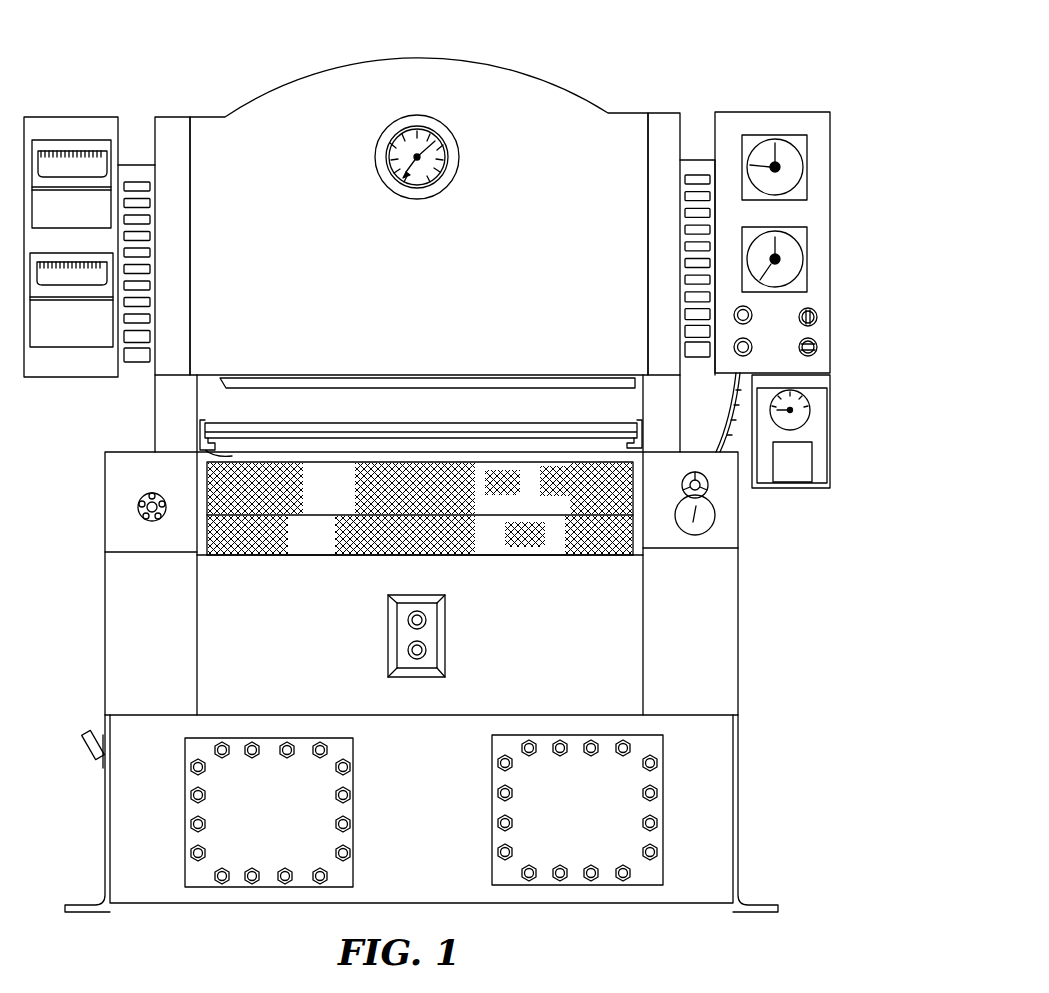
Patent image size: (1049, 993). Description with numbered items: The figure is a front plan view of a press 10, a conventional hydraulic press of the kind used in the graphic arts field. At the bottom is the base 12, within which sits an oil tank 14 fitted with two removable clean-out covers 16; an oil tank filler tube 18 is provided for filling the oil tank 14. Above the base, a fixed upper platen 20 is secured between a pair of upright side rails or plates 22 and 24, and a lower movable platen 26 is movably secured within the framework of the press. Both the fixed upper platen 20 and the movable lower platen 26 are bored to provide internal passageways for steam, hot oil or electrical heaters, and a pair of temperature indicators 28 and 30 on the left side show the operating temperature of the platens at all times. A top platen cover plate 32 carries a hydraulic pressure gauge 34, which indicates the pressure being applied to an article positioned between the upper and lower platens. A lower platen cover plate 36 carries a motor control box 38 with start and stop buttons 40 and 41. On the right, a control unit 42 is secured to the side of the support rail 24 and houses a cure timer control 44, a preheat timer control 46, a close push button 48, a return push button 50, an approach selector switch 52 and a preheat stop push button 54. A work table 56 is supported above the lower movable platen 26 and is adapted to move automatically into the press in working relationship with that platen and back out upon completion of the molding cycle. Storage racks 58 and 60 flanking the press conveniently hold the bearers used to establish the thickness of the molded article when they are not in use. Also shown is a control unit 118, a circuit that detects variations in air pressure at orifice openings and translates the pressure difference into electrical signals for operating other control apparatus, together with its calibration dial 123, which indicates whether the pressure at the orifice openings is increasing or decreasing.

The press 10 is at (574, 78).
The base 12 is at (98, 892).
The oil tank 14 is at (153, 885).
The removable clean-out covers 16 is at (236, 873).
The oil tank filler tube 18 is at (90, 748).
The fixed upper platen 20 is at (218, 380).
The upright side rail 22 is at (177, 130).
The upright side rail 24 is at (672, 125).
The lower movable platen 26 is at (210, 455).
The temperature indicator 28 is at (92, 160).
The temperature indicator 30 is at (82, 275).
The top platen cover plate 32 is at (270, 114).
The hydraulic pressure gauge 34 is at (440, 125).
The lower platen cover plate 36 is at (620, 600).
The motor control box 38 is at (447, 637).
The start button 40 is at (408, 617).
The stop button 41 is at (408, 651).
The control unit 42 is at (778, 118).
The cure timer control 44 is at (805, 140).
The preheat timer control 46 is at (748, 232).
The close push button 48 is at (752, 312).
The return push button 50 is at (752, 347).
The approach selector switch 52 is at (799, 318).
The preheat stop push button 54 is at (800, 354).
The work table 56 is at (610, 420).
The storage rack 58 is at (148, 280).
The storage rack 60 is at (690, 234).
The control unit 118 is at (822, 490).
The calibration dial 123 is at (775, 450).